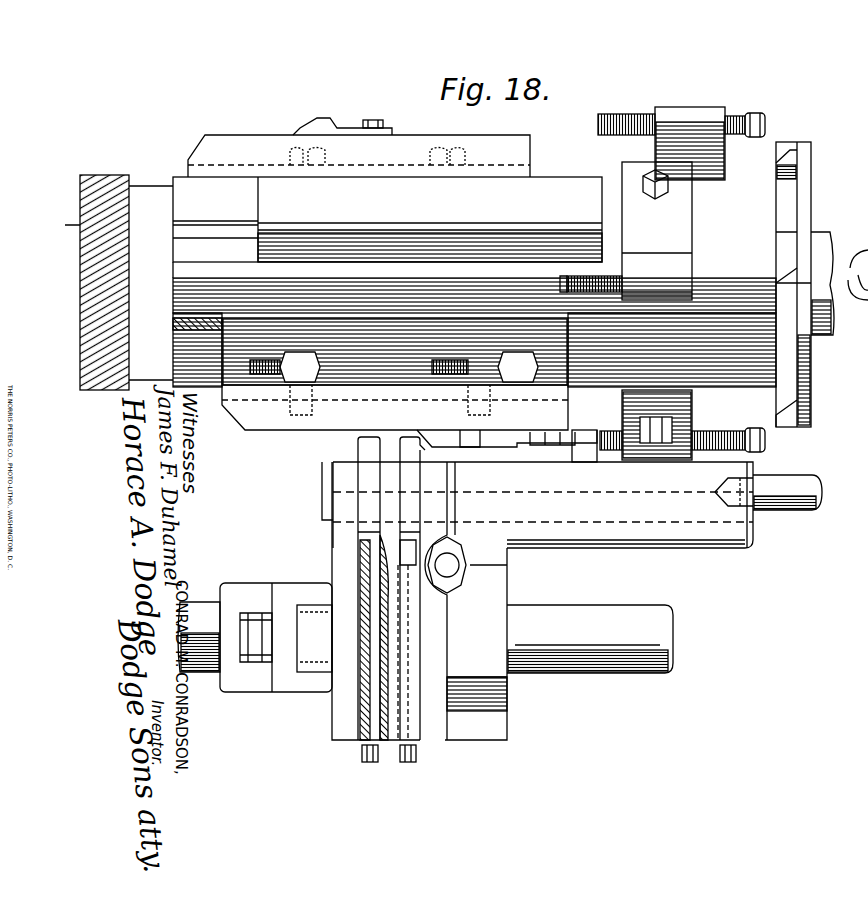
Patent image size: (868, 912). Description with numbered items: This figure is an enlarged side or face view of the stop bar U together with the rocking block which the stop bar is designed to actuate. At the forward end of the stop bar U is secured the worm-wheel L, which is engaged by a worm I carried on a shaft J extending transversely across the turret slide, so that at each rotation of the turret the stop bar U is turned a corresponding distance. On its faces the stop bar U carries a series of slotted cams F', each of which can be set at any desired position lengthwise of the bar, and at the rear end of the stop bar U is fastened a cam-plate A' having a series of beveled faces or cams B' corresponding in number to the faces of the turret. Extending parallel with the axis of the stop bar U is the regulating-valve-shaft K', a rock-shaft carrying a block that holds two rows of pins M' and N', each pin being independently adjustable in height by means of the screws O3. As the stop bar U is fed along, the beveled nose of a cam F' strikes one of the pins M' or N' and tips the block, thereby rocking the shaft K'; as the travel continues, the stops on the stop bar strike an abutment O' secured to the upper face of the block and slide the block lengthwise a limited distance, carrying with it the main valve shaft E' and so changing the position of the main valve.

The worm-wheel L is at (108, 178).
The stop bar U is at (474, 282).
The cam F' is at (400, 357).
The cam-plate A' is at (812, 284).
The beveled face B' is at (786, 283).
The worm I is at (858, 269).
The shaft J is at (860, 303).
The pin M' is at (360, 586).
The pin N' is at (537, 505).
The abutment O' is at (586, 457).
The screw O3 is at (362, 760).
The main valve shaft E' is at (810, 505).
The regulating-valve-shaft K' is at (590, 631).